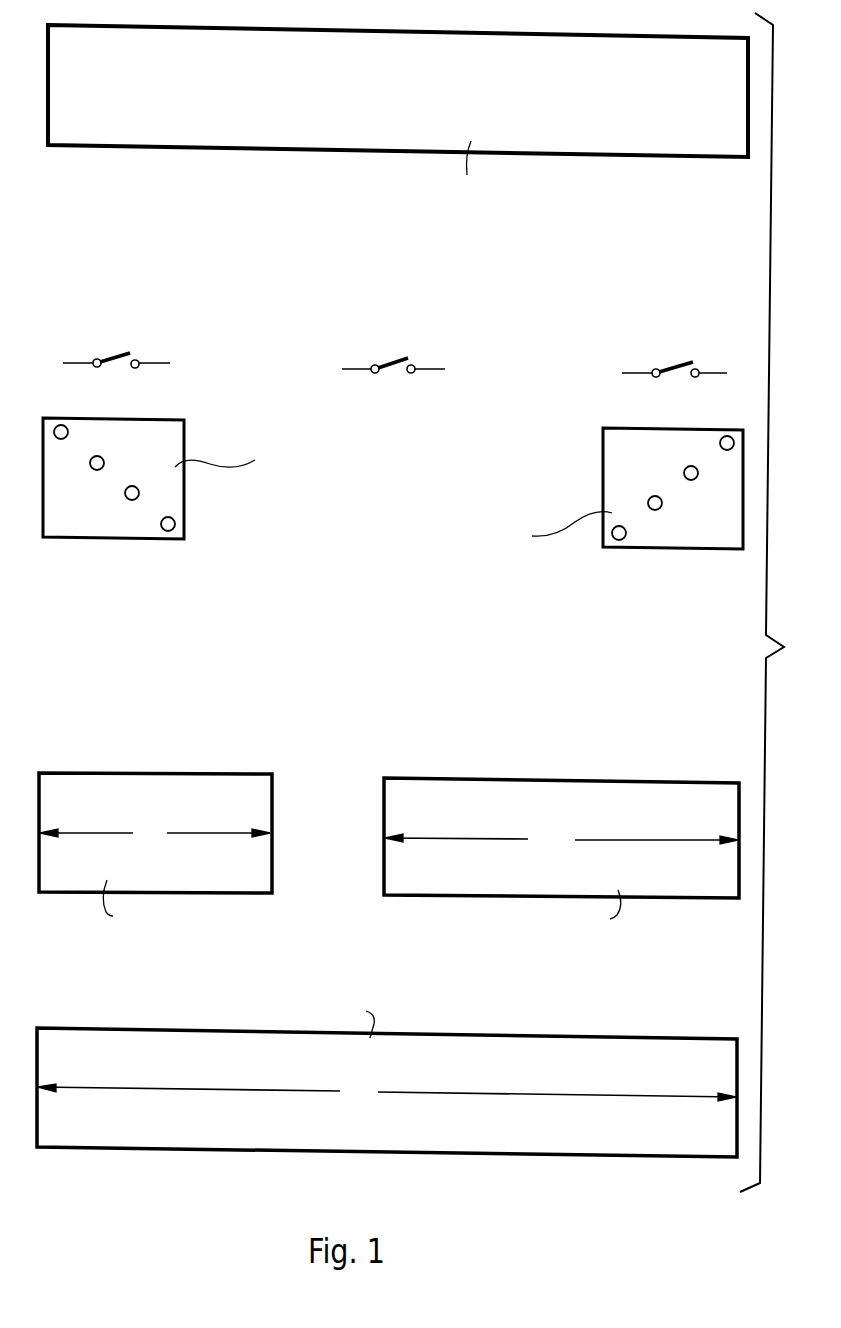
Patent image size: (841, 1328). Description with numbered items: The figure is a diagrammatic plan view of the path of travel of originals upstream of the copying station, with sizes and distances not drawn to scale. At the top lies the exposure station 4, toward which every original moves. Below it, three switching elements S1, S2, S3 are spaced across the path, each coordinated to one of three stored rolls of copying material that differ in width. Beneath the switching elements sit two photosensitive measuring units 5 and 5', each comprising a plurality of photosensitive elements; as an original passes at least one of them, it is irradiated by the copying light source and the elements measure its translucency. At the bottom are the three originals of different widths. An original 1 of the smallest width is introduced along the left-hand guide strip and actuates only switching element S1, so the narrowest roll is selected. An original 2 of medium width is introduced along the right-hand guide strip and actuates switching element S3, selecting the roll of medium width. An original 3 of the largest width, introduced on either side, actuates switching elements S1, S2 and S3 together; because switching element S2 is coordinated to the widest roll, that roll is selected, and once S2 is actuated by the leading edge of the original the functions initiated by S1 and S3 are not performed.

The original 1 is at (140, 790).
The original 2 is at (656, 795).
The original 3 is at (631, 1058).
The exposure station 4 is at (655, 145).
The photosensitive measuring unit 5 is at (211, 506).
The photosensitive measuring unit 5' is at (569, 511).
The switching element S1 is at (116, 346).
The switching element S2 is at (393, 351).
The switching element S3 is at (674, 356).